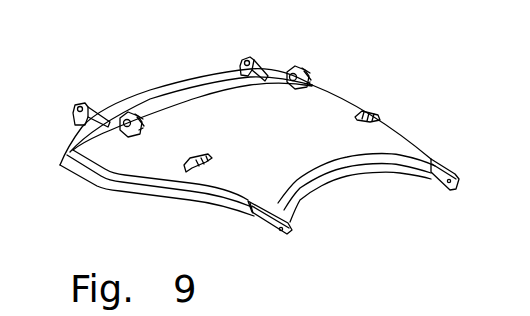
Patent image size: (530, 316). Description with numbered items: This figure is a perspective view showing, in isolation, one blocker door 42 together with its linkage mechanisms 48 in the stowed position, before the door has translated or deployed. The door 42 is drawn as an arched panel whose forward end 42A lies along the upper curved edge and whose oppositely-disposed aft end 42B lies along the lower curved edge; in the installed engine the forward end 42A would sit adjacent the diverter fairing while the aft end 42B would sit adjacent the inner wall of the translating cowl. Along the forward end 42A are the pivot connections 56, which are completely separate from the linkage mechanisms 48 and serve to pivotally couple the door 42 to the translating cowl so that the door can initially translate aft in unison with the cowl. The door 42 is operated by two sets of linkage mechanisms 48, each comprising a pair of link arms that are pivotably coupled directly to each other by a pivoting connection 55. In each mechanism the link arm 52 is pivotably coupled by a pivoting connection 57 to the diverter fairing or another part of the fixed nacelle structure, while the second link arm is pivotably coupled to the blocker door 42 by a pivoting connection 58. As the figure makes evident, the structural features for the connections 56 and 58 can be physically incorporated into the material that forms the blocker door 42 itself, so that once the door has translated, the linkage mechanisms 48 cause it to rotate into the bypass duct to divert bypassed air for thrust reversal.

The blocker door 42 is at (344, 108).
The forward end 42A is at (163, 85).
The aft end 42B is at (331, 181).
The linkage mechanism 48 is at (272, 238).
The link arm 52 is at (80, 127).
The pivoting connection 55 is at (295, 226).
The pivot connection 56 is at (128, 113).
The pivoting connection 57 is at (80, 106).
The pivoting connection 58 is at (191, 173).